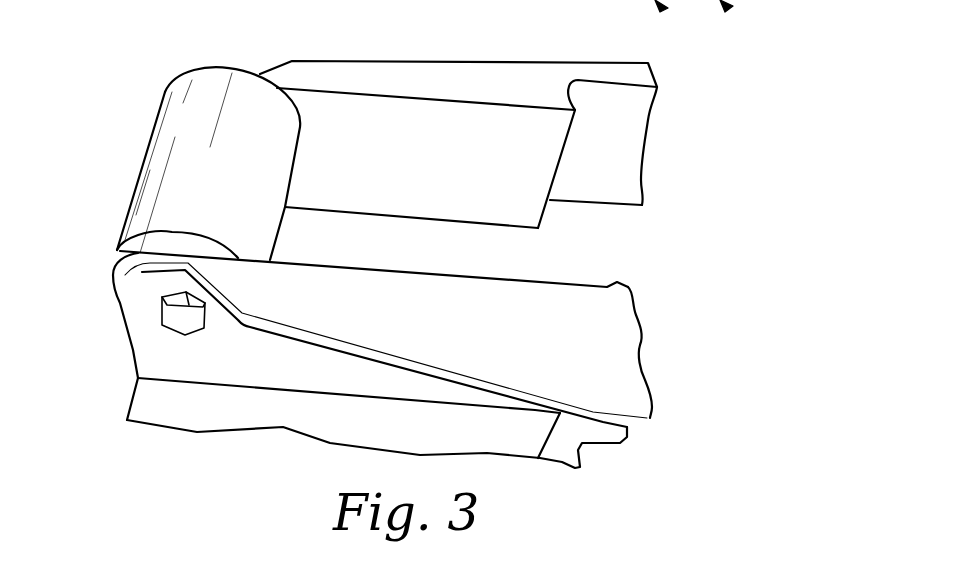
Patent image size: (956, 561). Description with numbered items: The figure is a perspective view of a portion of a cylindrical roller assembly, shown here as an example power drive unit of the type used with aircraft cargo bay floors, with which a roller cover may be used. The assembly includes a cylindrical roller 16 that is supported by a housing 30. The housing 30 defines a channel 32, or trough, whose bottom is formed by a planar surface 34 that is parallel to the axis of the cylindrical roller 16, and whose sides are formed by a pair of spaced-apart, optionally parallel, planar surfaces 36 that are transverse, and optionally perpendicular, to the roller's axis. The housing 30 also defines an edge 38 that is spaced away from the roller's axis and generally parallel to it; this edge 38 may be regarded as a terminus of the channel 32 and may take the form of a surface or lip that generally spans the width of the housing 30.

The cylindrical roller 16 is at (205, 68).
The housing 30 is at (518, 52).
The channel 32 is at (598, 241).
The planar surface 34 is at (427, 260).
The planar surfaces 36 is at (430, 172).
The edge 38 is at (128, 342).